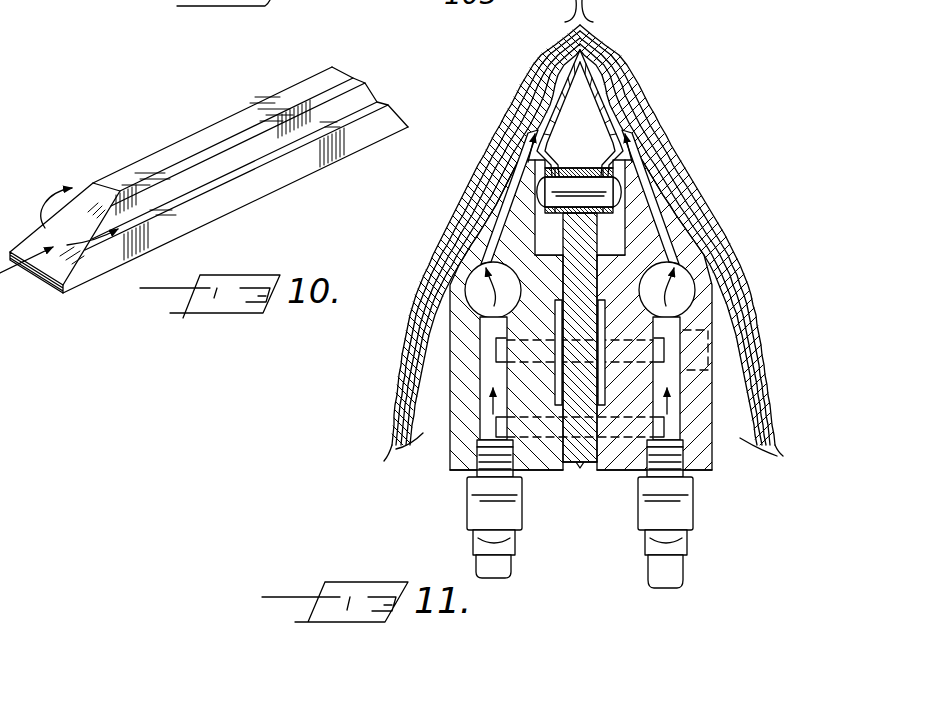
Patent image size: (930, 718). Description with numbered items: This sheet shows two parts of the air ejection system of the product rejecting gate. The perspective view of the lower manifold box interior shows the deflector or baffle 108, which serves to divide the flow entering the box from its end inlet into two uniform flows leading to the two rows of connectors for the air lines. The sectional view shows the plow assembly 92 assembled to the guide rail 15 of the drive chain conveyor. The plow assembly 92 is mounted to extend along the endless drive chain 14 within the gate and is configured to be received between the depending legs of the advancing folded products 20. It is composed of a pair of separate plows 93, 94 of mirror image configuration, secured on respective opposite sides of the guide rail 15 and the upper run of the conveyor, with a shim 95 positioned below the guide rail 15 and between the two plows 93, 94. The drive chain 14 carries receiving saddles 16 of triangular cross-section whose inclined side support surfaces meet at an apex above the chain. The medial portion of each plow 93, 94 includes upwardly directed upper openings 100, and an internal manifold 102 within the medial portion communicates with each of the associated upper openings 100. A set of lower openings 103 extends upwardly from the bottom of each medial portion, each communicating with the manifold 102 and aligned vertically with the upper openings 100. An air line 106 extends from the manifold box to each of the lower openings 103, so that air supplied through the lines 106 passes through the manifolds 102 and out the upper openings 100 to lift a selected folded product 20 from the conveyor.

In FIG. 11, the endless drive chain 14 is at (572, 176).
In FIG. 11, the guide rail 15 is at (588, 233).
In FIG. 11, the receiving saddles 16 is at (601, 97).
In FIG. 11, the folded product 20 is at (652, 128).
In FIG. 11, the plow assembly 92 is at (443, 462).
In FIG. 11, the plow 93 is at (697, 387).
In FIG. 11, the plow 94 is at (457, 335).
In FIG. 11, the shim 95 is at (585, 465).
In FIG. 11, the upper openings 100 is at (499, 216).
In FIG. 11, the internal manifold 102 is at (476, 290).
In FIG. 11, the lower openings 103 is at (488, 375).
In FIG. 11, the air line 106 is at (652, 570).
In FIG. 10, the baffle 108 is at (89, 182).